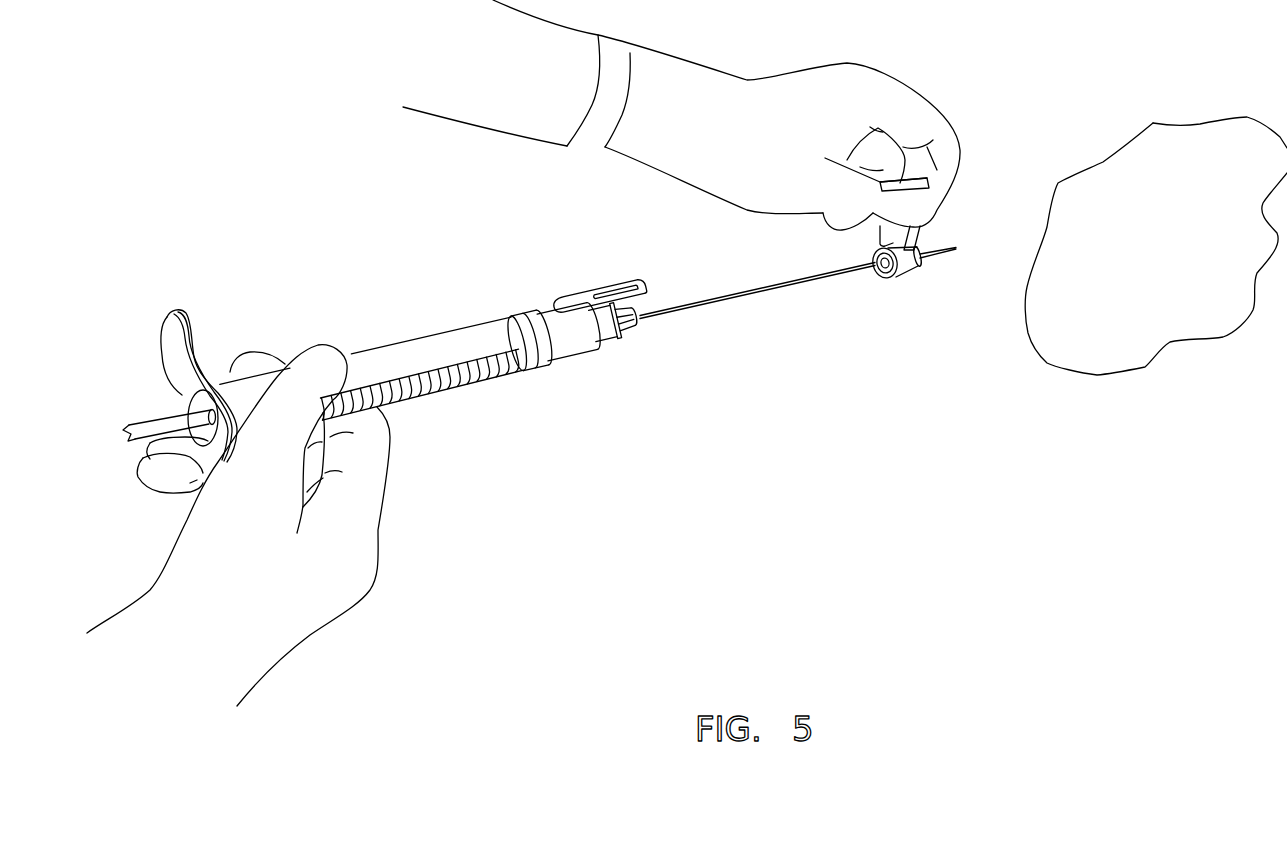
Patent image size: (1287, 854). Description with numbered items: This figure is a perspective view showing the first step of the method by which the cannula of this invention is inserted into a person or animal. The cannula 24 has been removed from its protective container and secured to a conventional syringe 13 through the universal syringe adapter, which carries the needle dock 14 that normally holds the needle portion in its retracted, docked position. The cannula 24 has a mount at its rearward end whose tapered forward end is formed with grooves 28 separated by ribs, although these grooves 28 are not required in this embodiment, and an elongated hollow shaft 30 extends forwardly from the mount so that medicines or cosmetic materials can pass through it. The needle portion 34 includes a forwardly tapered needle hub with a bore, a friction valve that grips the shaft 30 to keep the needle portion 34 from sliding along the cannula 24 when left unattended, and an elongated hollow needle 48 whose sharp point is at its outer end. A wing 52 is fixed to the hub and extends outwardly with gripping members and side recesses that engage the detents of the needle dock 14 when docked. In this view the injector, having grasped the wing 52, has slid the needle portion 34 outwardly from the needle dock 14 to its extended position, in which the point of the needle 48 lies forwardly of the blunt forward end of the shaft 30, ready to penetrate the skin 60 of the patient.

The syringe 13 is at (440, 318).
The needle dock 14 is at (570, 283).
The cannula 24 is at (818, 298).
The grooves 28 is at (633, 333).
The shaft 30 is at (760, 287).
The needle portion 34 is at (913, 285).
The needle 48 is at (954, 238).
The wing 52 is at (936, 157).
The skin 60 is at (1167, 182).